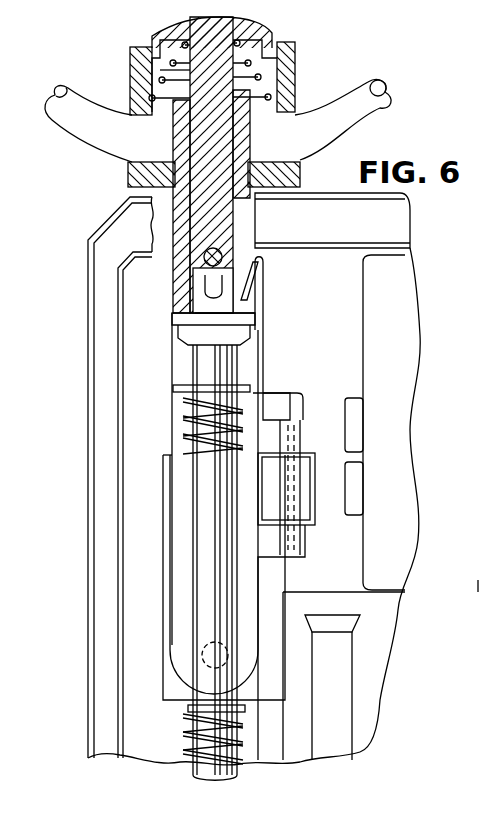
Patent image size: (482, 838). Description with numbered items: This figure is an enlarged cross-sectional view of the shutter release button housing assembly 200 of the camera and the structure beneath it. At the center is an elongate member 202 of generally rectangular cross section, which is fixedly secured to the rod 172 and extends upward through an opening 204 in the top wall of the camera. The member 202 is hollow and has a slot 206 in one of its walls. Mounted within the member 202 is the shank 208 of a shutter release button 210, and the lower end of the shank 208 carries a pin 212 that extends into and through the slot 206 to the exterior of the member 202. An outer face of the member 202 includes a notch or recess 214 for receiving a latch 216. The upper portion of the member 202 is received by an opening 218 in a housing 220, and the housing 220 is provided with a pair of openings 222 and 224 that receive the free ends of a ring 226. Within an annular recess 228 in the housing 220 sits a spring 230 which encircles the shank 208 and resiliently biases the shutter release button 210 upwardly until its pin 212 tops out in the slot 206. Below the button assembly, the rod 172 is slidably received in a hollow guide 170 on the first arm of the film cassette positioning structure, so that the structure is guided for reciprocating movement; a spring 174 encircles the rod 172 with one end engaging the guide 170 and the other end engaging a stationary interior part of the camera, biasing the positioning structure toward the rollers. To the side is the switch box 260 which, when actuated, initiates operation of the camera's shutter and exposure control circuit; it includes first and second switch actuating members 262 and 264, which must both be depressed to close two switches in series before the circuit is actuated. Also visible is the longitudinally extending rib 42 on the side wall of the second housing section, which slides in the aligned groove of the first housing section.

The actuator assembly 200 is at (320, 58).
The elongate member 202 is at (253, 233).
The opening 204 is at (255, 212).
The slot 206 is at (203, 287).
The shank 208 is at (195, 200).
The shutter release button 210 is at (178, 30).
The pin 212 is at (203, 260).
The notch or recess 214 is at (243, 297).
The latch 216 is at (267, 267).
The opening 218 is at (302, 167).
The housing 220 is at (137, 67).
The opening 222 is at (142, 152).
The opening 224 is at (298, 116).
The ring 226 is at (367, 113).
The annular recess 228 is at (158, 87).
The spring 230 is at (163, 78).
The switch box 260 is at (373, 377).
The first switch actuating member 262 is at (355, 420).
The second switch actuating member 264 is at (355, 487).
The hollow guide 170 is at (162, 602).
The rod 172 is at (213, 533).
The spring 174 is at (183, 414).
The rib 42 is at (464, 555).